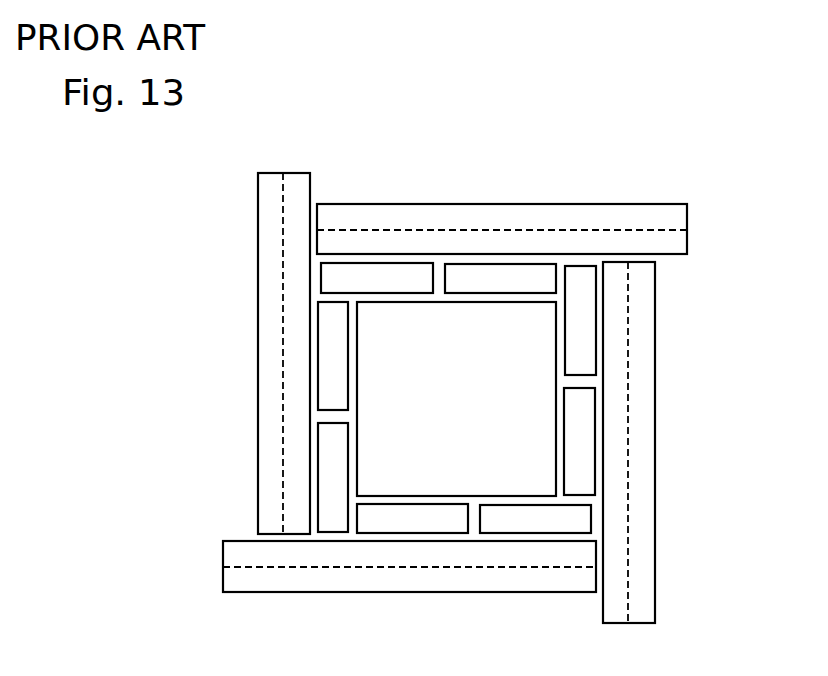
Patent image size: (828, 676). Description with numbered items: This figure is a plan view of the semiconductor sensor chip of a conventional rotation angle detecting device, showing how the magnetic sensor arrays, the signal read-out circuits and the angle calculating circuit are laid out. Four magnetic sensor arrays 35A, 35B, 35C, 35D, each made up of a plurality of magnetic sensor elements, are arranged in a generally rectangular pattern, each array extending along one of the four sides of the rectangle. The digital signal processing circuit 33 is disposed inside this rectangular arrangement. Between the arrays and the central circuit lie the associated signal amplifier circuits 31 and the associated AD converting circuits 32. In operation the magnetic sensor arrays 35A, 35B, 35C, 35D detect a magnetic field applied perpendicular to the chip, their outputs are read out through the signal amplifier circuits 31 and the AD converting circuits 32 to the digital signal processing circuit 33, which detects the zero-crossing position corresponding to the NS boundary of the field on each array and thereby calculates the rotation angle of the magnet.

The signal amplifier circuit 31 is at (392, 273).
The AD converting circuit 32 is at (514, 270).
The digital signal processing circuit 33 is at (538, 357).
The magnetic sensor array 35A is at (465, 204).
The magnetic sensor array 35B is at (655, 430).
The magnetic sensor array 35C is at (435, 593).
The magnetic sensor array 35D is at (258, 390).